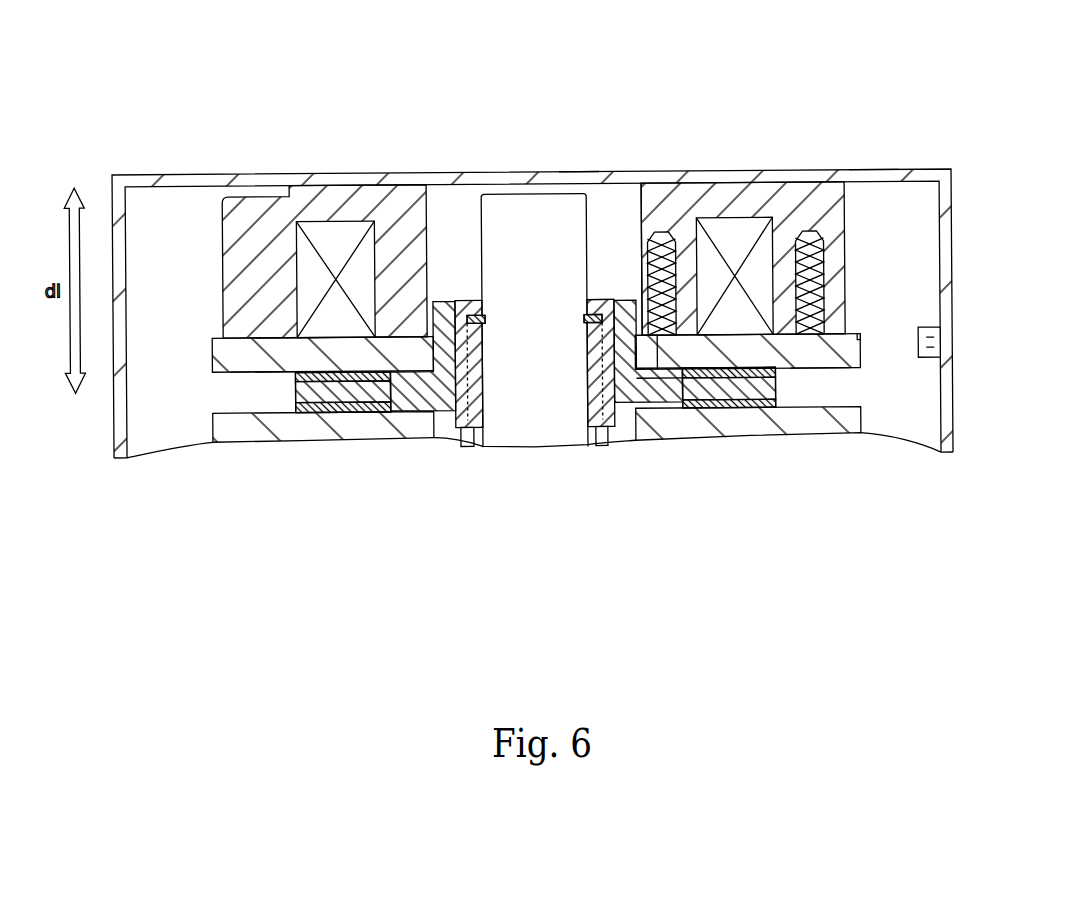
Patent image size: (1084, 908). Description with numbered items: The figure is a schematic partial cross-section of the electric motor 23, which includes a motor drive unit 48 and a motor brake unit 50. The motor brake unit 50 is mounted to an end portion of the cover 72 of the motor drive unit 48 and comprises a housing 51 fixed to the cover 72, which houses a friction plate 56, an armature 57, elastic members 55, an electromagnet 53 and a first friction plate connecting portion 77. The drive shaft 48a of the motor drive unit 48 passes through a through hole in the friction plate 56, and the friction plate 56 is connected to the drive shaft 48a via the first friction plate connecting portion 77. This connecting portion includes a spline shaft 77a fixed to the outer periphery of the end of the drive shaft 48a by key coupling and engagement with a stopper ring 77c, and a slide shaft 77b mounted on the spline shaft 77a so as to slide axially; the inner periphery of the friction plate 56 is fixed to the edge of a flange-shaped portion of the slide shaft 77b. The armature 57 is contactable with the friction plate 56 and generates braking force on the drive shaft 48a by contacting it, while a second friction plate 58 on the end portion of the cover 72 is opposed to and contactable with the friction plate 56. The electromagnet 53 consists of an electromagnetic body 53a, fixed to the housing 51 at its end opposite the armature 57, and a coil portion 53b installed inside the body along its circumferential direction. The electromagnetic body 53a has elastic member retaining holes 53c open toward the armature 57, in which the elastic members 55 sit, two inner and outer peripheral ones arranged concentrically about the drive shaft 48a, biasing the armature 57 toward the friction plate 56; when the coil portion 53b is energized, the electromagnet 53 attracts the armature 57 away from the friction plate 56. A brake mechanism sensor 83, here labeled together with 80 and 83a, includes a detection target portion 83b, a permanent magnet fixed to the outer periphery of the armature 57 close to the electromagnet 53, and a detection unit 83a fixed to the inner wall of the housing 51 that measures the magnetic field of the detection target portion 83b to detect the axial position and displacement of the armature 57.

The electric motor 23 is at (578, 105).
The motor drive unit 48 is at (535, 375).
The drive shaft 48a is at (530, 437).
The motor brake unit 50 is at (871, 122).
The housing 51 is at (167, 169).
The electromagnet 53 is at (767, 225).
The electromagnetic body 53a is at (397, 200).
The coil portion 53b is at (318, 236).
The elastic member retaining hole 53c is at (643, 242).
The elastic member 55 is at (660, 233).
The friction plate 56 is at (345, 394).
The armature 57 is at (272, 381).
The friction plate 58 is at (697, 411).
The cover 72 is at (250, 423).
The first friction plate connecting portion 77 is at (612, 434).
The spline shaft 77a is at (459, 446).
The slide shaft 77b is at (650, 394).
The stopper ring 77c is at (590, 298).
The sensor unit 80 is at (905, 420).
The brake mechanism sensor 83 is at (905, 420).
The detection unit 83a is at (918, 345).
The detection target portion 83b is at (862, 339).